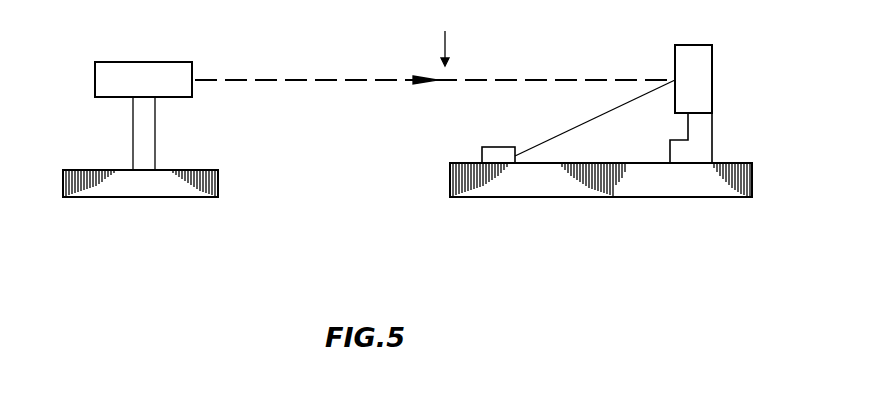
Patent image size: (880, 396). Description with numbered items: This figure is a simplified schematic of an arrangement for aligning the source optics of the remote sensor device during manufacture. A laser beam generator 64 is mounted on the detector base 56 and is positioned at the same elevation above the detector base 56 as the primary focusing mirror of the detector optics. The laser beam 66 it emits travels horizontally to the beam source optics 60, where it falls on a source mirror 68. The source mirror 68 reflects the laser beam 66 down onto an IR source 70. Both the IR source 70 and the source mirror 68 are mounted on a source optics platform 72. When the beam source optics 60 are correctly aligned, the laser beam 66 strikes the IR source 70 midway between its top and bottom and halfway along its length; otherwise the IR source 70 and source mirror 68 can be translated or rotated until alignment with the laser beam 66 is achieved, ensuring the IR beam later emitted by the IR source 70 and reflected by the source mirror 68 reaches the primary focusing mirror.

The detector base 56 is at (218, 180).
The laser beam generator 64 is at (153, 62).
The laser beam 66 is at (227, 77).
The beam source optics 60 is at (585, 52).
The source mirror 68 is at (705, 72).
The IR source 70 is at (494, 155).
The source optics platform 72 is at (752, 168).